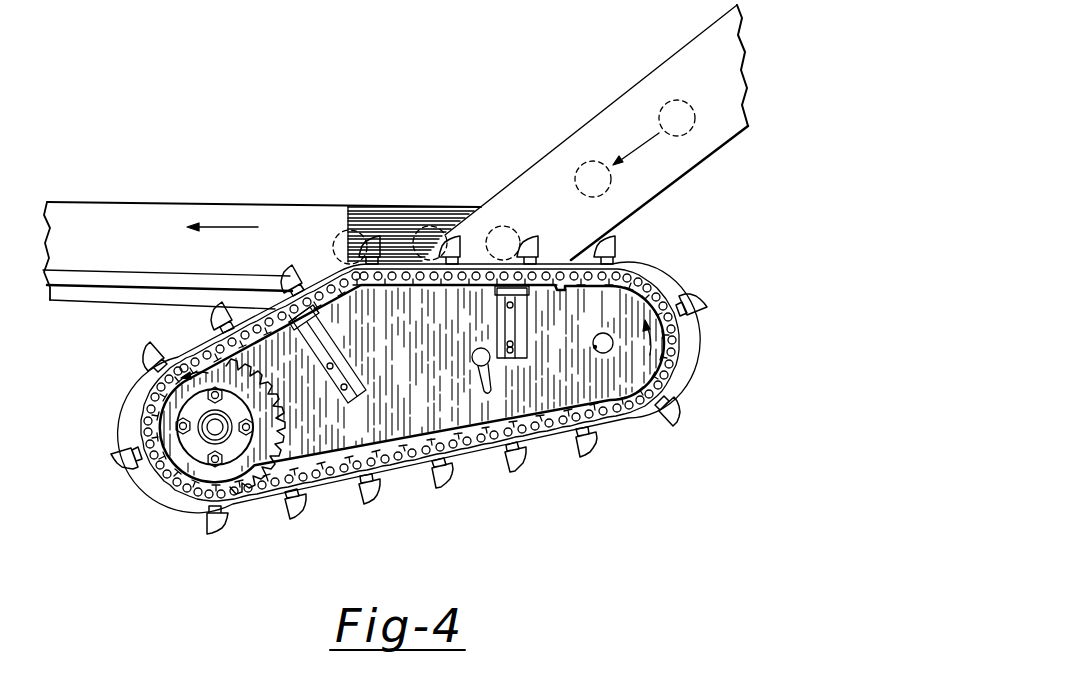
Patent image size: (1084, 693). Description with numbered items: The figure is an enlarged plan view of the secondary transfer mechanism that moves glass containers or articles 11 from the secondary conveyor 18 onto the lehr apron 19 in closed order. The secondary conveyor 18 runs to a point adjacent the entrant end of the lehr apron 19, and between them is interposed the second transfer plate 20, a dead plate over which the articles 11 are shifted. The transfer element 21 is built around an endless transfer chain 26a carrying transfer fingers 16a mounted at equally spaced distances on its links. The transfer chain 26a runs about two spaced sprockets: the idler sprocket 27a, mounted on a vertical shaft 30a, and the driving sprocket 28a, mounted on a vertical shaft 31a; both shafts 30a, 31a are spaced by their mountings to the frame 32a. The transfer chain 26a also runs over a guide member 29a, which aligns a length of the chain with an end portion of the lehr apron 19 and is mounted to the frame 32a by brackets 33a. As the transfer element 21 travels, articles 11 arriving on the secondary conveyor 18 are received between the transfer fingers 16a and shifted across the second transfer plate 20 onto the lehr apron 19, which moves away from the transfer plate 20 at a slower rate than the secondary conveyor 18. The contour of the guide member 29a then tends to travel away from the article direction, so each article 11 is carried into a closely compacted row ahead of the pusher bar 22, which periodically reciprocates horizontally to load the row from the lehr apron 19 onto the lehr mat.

The glass containers or articles 11 is at (592, 165).
The secondary conveyor 18 is at (657, 88).
The lehr apron 19 is at (275, 222).
The second transfer plate 20 is at (440, 185).
The transfer element 21 is at (553, 465).
The pusher bar 22 is at (107, 280).
The transfer fingers 16a is at (530, 250).
The transfer chain 26a is at (630, 268).
The idler sprocket 27a is at (647, 367).
The driving sprocket 28a is at (185, 457).
The guide member 29a is at (395, 283).
The vertical shaft 30a is at (607, 339).
The vertical shaft 31a is at (215, 430).
The frame 32a is at (402, 422).
The brackets 33a is at (497, 305).